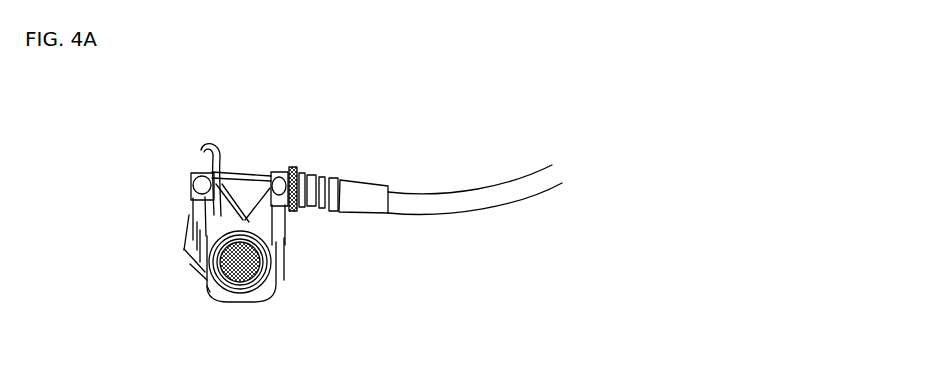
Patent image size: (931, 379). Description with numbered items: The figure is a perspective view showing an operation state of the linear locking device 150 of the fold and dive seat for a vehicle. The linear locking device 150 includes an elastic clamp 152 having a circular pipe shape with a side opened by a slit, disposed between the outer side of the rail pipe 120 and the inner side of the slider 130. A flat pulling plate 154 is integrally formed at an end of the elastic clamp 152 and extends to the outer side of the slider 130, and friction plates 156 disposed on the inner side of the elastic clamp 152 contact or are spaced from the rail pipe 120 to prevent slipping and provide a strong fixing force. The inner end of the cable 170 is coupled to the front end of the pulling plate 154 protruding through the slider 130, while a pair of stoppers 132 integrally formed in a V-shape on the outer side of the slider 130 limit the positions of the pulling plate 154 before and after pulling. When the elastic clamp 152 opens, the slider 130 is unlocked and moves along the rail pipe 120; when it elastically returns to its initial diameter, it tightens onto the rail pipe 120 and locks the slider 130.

The rail pipe 120 is at (262, 300).
The slider 130 is at (292, 259).
The stoppers 132 is at (200, 163).
The linear locking device 150 is at (170, 345).
The elastic clamp 152 is at (205, 272).
The pulling plate 154 is at (197, 222).
The friction plates 156 is at (210, 292).
The cable 170 is at (424, 200).